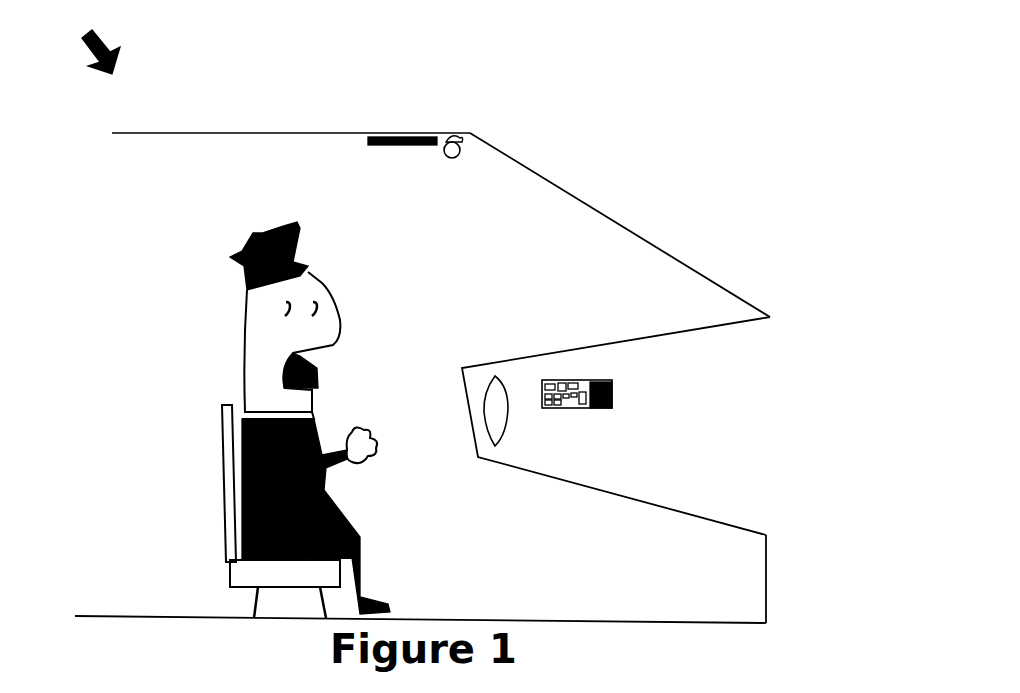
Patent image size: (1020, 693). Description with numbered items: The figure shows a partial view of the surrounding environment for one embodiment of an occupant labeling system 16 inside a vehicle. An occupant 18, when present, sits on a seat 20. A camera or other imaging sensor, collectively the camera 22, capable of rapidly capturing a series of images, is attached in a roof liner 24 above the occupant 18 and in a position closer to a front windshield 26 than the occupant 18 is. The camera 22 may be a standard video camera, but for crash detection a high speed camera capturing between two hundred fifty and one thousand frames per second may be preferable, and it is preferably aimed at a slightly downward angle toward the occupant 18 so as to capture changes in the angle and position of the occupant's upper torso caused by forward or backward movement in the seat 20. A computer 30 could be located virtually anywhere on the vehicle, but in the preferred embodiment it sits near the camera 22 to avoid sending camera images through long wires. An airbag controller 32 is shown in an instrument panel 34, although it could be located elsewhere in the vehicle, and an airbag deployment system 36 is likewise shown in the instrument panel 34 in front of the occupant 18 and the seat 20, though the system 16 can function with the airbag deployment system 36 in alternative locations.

The occupant labeling system 16 is at (91, 43).
The occupant 18 is at (243, 335).
The seat 20 is at (222, 433).
The camera 22 is at (460, 154).
The roof liner 24 is at (266, 133).
The front windshield 26 is at (680, 262).
The computer 30 is at (408, 145).
The airbag controller 32 is at (612, 380).
The instrument panel 34 is at (462, 368).
The airbag deployment system 36 is at (510, 423).